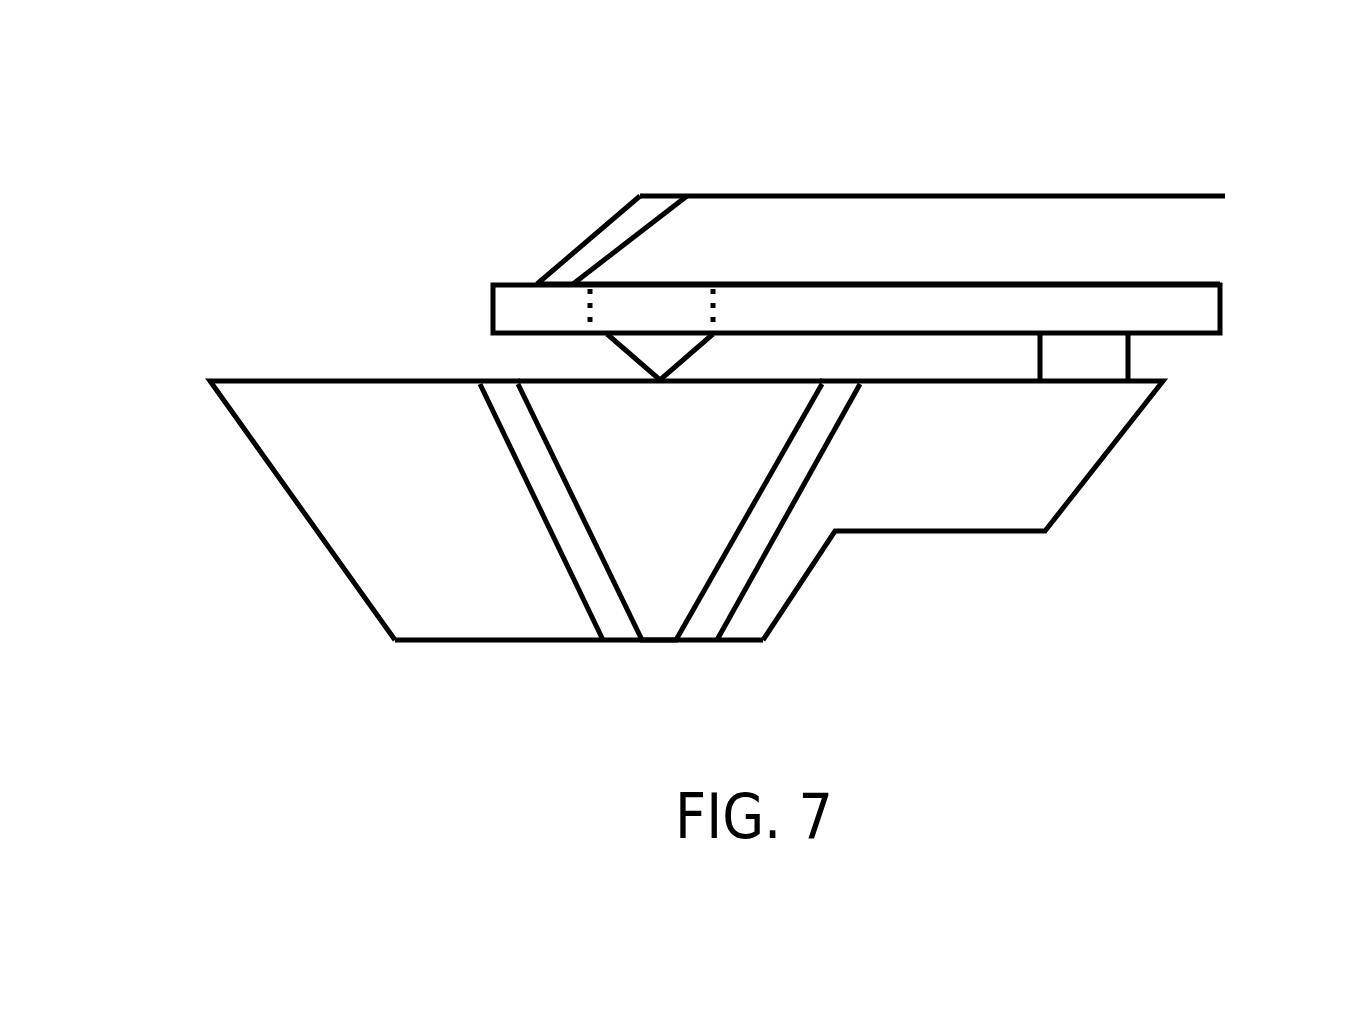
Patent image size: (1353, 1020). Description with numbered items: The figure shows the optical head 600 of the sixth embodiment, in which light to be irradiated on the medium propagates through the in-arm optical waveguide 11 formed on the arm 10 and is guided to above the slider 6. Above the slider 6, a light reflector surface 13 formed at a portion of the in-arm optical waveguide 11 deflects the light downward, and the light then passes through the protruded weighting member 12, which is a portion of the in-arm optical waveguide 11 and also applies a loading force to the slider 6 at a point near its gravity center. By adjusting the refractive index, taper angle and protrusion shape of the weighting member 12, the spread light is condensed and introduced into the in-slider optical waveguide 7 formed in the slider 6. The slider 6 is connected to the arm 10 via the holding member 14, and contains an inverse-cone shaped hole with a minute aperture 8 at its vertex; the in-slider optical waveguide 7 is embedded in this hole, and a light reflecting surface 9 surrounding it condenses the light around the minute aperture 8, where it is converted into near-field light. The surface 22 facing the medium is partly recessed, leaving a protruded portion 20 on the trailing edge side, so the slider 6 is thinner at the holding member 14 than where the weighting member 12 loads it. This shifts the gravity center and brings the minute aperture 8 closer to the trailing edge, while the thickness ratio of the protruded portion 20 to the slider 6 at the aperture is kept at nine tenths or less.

The optical head 600 is at (336, 225).
The in-arm optical waveguide 11 is at (1085, 212).
The light reflector surface 13 is at (590, 242).
The arm 10 is at (1147, 302).
The holding member 14 is at (1117, 362).
The weighting member 12 is at (628, 350).
The slider 6 is at (445, 512).
The in-slider optical waveguide 7 is at (658, 480).
The minute aperture 8 is at (663, 642).
The light reflecting surface 9 is at (740, 568).
The protruded portion 20 is at (1013, 452).
The surface facing the medium 22 is at (472, 642).